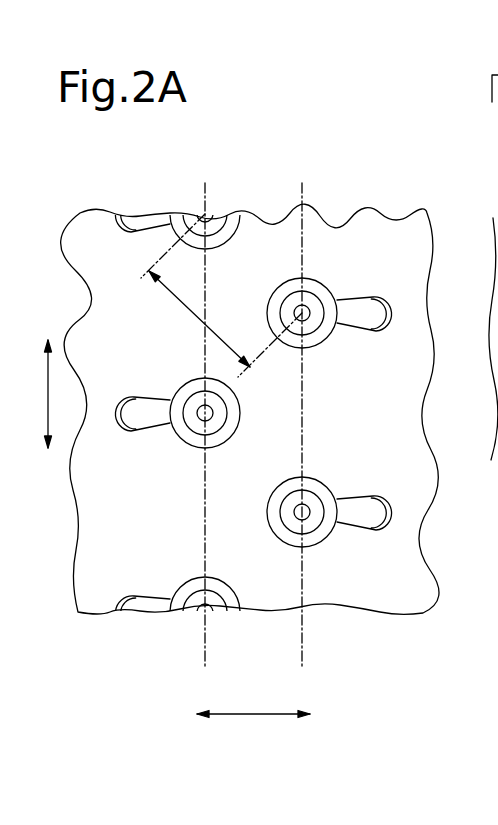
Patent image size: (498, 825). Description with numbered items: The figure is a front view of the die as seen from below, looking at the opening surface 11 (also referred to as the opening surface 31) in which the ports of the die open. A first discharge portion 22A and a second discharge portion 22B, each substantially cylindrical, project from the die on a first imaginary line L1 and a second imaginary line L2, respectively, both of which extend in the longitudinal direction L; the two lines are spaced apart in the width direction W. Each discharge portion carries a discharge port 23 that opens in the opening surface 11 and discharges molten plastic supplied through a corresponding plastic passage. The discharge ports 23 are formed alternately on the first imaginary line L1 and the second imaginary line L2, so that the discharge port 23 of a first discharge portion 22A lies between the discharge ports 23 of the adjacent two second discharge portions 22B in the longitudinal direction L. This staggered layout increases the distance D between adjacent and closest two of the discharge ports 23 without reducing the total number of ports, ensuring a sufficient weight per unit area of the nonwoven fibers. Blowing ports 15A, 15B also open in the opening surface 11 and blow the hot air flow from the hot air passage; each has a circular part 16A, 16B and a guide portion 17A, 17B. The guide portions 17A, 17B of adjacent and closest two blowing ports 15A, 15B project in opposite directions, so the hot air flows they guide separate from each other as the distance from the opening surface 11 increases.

The opening surface 11 is at (279, 361).
The opening surface 31 is at (257, 224).
The discharge port 23 is at (246, 384).
The first discharge portion 22A is at (200, 411).
The second discharge portion 22B is at (304, 311).
The blowing port 15A is at (168, 453).
The first circular hole 16A is at (188, 435).
The guide portion 17A is at (137, 417).
The blowing port 15B is at (340, 486).
The second circular hole 16B is at (318, 337).
The guide portion 17B is at (368, 320).
The first imaginary line L1 is at (203, 440).
The second imaginary line L2 is at (300, 440).
The distance D is at (221, 295).
The width direction W is at (253, 703).
The longitudinal direction L is at (40, 394).